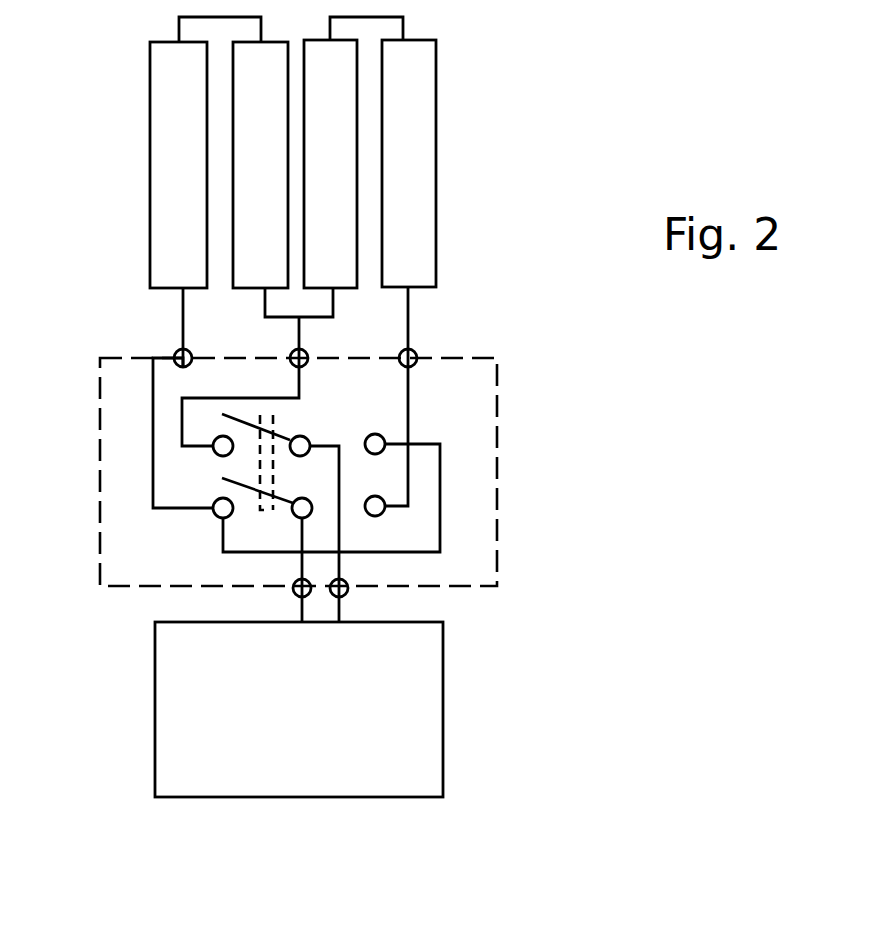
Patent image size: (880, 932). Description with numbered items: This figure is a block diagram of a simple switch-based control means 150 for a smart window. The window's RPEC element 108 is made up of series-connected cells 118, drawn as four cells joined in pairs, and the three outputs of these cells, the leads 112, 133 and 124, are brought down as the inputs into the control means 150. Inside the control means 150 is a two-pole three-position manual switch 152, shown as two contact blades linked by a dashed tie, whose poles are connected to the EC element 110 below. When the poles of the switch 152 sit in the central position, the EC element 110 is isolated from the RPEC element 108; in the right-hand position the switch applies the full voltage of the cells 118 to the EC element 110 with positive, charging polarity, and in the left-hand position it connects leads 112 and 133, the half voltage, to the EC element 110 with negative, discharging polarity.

The RPEC element 108 is at (502, 150).
The series-connected cells 118 is at (168, 138).
The output lead 112 is at (186, 308).
The output lead 133 is at (295, 335).
The output lead 124 is at (410, 315).
The control means 150 is at (353, 454).
The two-pole three-position manual switch 152 is at (292, 422).
The EC element 110 is at (287, 713).